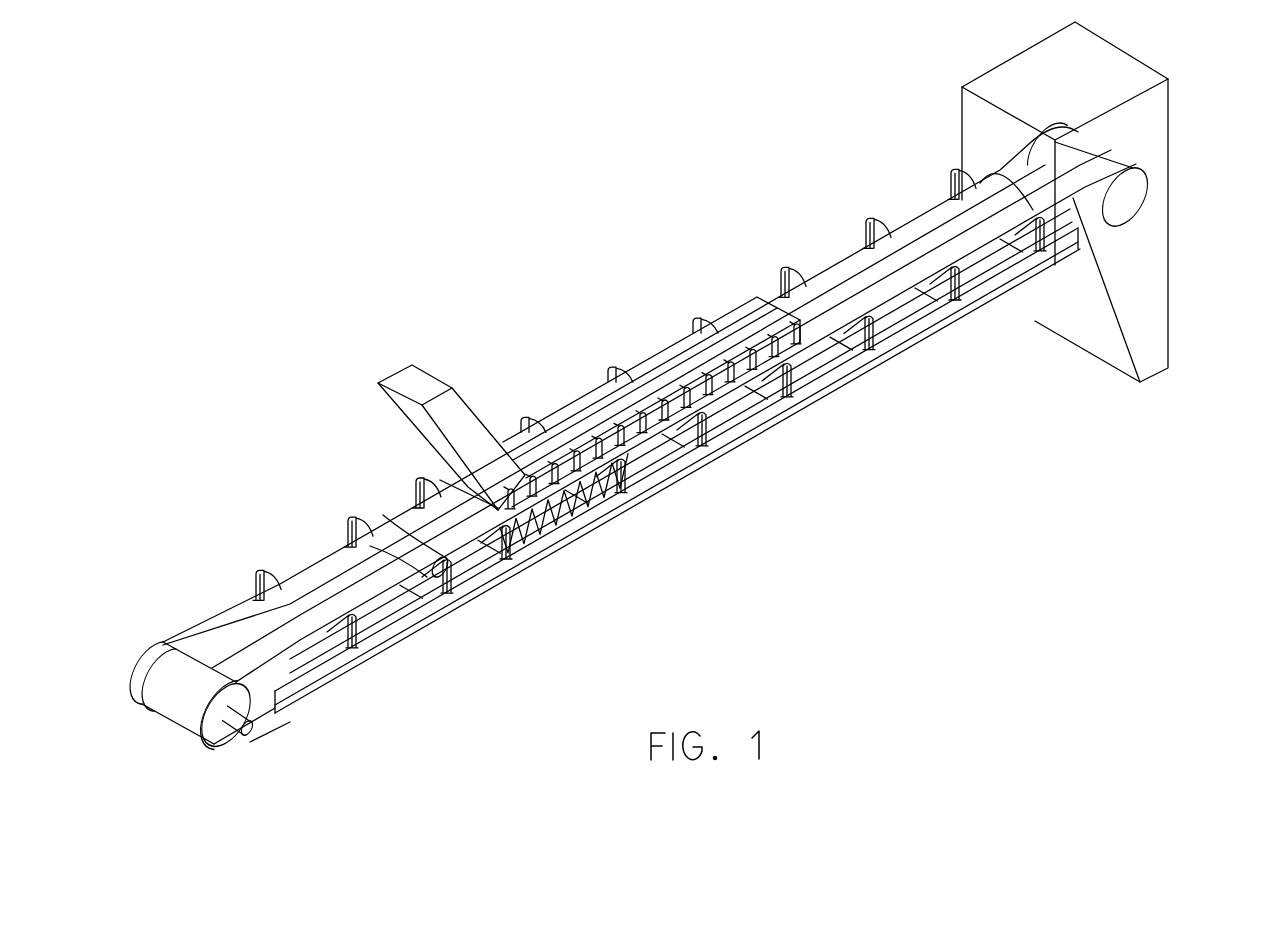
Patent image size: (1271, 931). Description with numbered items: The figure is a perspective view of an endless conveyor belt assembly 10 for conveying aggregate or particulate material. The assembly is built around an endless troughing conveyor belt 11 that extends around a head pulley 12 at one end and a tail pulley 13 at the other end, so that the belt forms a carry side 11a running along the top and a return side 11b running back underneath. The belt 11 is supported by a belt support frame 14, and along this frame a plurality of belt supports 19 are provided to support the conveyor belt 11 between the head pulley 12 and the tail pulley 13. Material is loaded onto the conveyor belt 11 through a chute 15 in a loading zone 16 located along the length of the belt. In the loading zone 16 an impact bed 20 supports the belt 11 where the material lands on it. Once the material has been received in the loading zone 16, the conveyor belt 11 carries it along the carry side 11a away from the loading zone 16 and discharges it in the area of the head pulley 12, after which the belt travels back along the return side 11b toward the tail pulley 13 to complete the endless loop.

The endless conveyor belt assembly 10 is at (640, 305).
The endless troughing conveyor belt 11 is at (847, 270).
The carry side 11a is at (327, 562).
The return side 11b is at (263, 718).
The head pulley 12 is at (1130, 212).
The tail pulley 13 is at (227, 740).
The belt support frame 14 is at (660, 477).
The chute 15 is at (452, 388).
The loading zone 16 is at (740, 318).
The belt supports 19 is at (887, 337).
The impact bed 20 is at (596, 503).